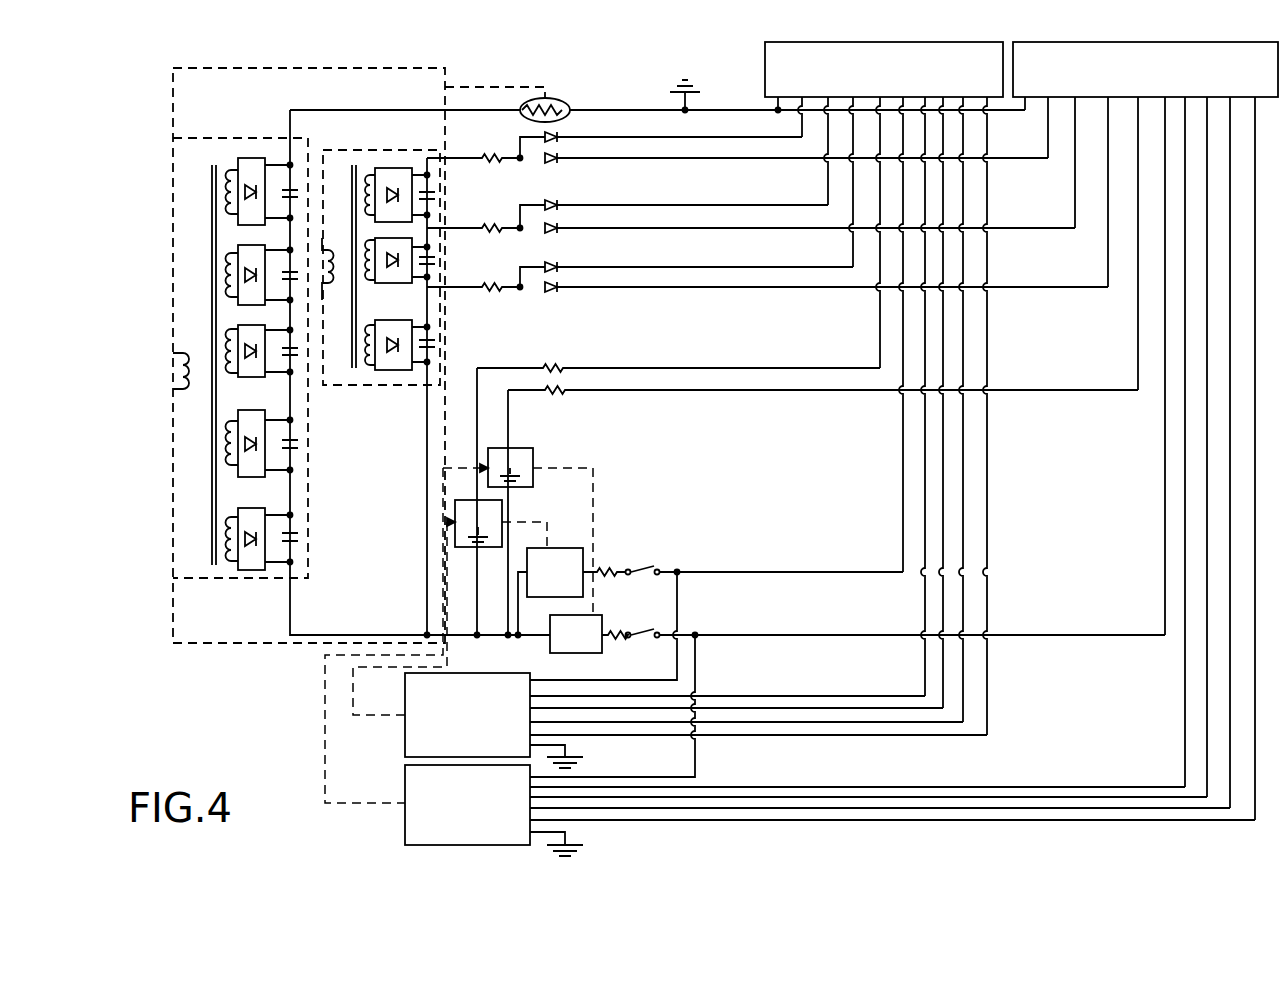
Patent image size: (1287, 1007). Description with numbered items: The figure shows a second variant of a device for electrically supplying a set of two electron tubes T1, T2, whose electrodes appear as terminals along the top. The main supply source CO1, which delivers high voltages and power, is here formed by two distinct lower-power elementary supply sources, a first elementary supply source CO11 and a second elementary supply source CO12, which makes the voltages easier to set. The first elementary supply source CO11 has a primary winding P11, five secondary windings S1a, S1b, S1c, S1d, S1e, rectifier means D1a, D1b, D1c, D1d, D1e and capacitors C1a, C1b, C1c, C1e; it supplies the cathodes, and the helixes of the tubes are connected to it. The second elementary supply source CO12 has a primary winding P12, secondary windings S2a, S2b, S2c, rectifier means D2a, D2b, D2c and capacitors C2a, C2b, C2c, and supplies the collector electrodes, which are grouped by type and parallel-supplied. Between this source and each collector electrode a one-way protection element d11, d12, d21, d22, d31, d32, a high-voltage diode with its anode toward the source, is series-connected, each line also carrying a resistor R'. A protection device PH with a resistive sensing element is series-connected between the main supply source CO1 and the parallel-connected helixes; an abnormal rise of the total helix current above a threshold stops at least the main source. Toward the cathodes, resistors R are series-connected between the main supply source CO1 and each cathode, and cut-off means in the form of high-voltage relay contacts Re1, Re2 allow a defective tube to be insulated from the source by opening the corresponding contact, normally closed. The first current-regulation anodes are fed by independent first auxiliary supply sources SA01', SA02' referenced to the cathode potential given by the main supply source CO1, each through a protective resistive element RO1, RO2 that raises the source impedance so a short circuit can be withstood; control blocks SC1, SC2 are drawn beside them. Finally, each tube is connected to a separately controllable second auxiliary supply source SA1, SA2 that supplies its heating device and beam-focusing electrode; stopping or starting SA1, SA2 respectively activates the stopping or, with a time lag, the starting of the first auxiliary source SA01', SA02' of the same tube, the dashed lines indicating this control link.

The main supply source CO1 is at (262, 647).
The first elementary supply source CO11 is at (242, 585).
The second elementary supply source CO12 is at (397, 388).
The primary winding P11 is at (190, 392).
The primary winding P12 is at (336, 259).
The secondary winding S1a is at (232, 166).
The secondary winding S1b is at (221, 270).
The secondary winding S1c is at (221, 346).
The secondary winding S1d is at (232, 416).
The secondary winding S1e is at (232, 508).
The rectifier means D1a is at (249, 156).
The rectifier means D1b is at (256, 244).
The rectifier means D1c is at (256, 324).
The rectifier means D1d is at (268, 402).
The rectifier means D1e is at (256, 502).
The capacitor C1a is at (288, 182).
The capacitor C1b is at (298, 270).
The capacitor C1c is at (296, 344).
The capacitor C1e is at (302, 536).
The secondary winding S2a is at (369, 172).
The secondary winding S2b is at (356, 284).
The secondary winding S2c is at (368, 366).
The rectifier means D2a is at (390, 158).
The rectifier means D2b is at (392, 286).
The rectifier means D2c is at (384, 314).
The capacitor C2a is at (438, 196).
The capacitor C2b is at (438, 268).
The capacitor C2c is at (436, 340).
The protection device PH is at (553, 97).
The resistor R' is at (473, 214).
The one-way protection element d11 is at (560, 130).
The one-way protection element d12 is at (560, 153).
The one-way protection element d21 is at (560, 200).
The one-way protection element d22 is at (560, 223).
The one-way protection element d31 is at (560, 262).
The one-way protection element d32 is at (560, 283).
The resistive element RO1 is at (556, 362).
The resistive element RO2 is at (558, 396).
The first auxiliary supply source SA02' is at (510, 467).
The first auxiliary supply source SA01' is at (478, 523).
The control circuit SC1 is at (555, 572).
The control circuit SC2 is at (576, 634).
The resistor R is at (605, 590).
The high-voltage relay Re1 is at (650, 566).
The high-voltage relay Re2 is at (650, 629).
The second auxiliary supply source SA1 is at (494, 720).
The second auxiliary supply source SA2 is at (494, 810).
The tube T1 is at (884, 69).
The tube T2 is at (1145, 69).